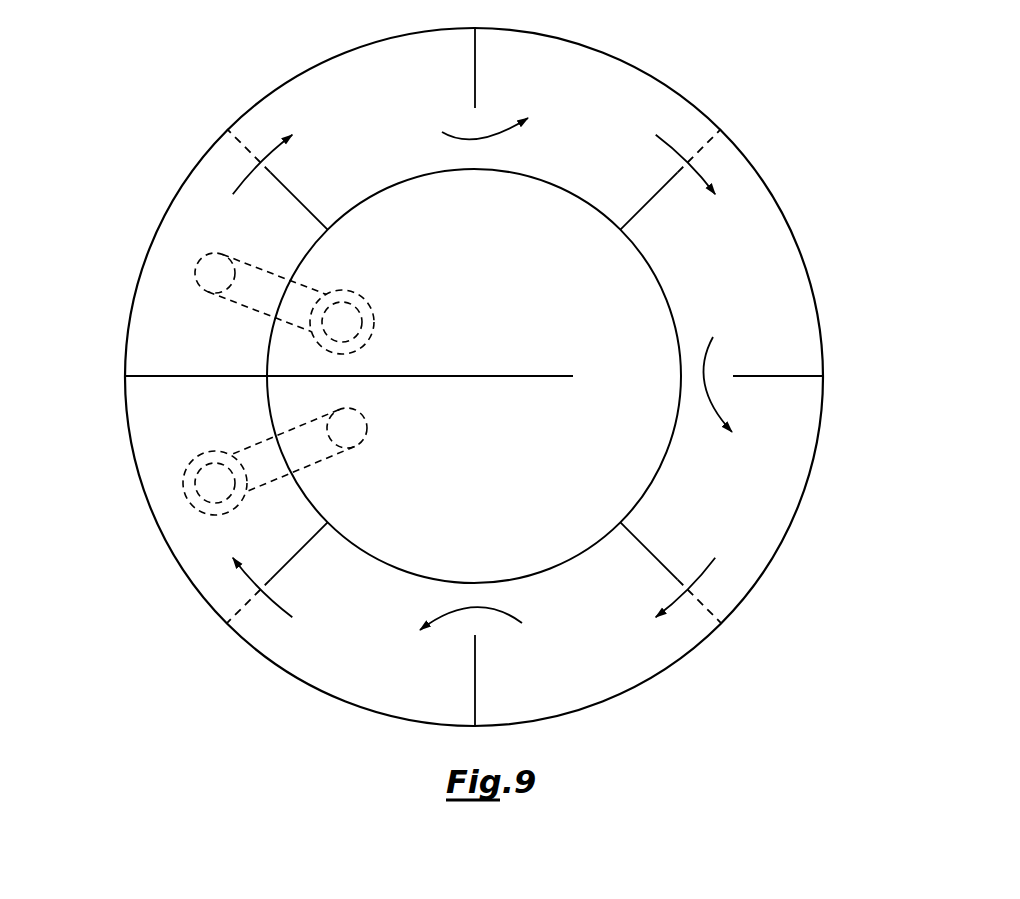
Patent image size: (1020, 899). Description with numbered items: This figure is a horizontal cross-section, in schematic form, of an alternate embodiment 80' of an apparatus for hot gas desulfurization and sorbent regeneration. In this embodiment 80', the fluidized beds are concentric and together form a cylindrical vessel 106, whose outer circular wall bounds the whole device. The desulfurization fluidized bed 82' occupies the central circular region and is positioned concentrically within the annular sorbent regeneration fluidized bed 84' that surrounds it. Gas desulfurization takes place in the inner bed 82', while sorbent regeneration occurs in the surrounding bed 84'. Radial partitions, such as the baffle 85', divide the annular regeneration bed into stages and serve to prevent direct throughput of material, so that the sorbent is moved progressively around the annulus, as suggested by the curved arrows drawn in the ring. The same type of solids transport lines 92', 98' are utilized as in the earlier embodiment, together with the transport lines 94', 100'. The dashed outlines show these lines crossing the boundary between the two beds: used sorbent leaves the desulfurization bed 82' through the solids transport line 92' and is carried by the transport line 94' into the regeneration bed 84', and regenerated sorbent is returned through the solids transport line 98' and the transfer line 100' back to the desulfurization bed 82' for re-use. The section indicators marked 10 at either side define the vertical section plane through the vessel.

The alternate embodiment of apparatus for desulfurization and sorbent regeneration 80' is at (195, 72).
The desulfurization fluidized bed 82' is at (474, 376).
The sorbent regeneration fluidized bed 84' is at (473, 422).
The baffle 85' is at (508, 67).
The solids transport line 92' is at (376, 315).
The transport line 94' is at (260, 267).
The solids transport line 98' is at (195, 456).
The transfer line 100' is at (314, 455).
The cylindrical vessel 106 is at (806, 481).
The section line 10- 10 is at (90, 376).